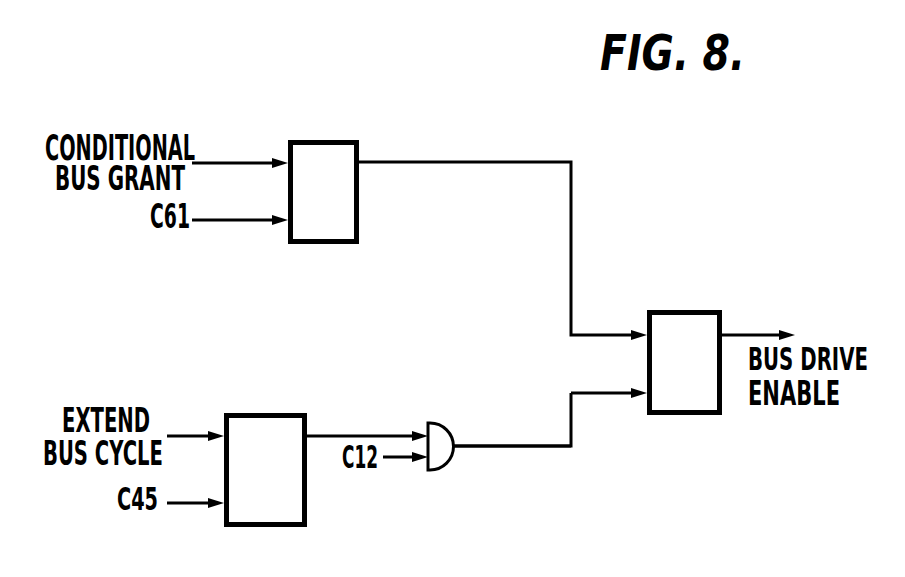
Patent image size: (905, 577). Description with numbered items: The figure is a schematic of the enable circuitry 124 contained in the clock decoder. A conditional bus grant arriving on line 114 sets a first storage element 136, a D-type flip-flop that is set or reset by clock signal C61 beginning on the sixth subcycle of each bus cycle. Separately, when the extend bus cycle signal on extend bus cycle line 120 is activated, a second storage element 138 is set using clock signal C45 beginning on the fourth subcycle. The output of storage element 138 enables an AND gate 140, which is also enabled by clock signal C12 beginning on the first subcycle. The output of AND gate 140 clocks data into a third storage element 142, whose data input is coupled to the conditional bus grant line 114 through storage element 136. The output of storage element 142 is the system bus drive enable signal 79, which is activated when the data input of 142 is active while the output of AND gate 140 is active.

The conditional bus grant line 114 is at (240, 161).
The storage element 136 is at (318, 140).
The storage element 142 is at (683, 310).
The system bus drive enable signal 79 is at (754, 333).
The extend bus cycle line 120 is at (192, 434).
The storage element 138 is at (258, 413).
The AND gate 140 is at (443, 430).
The enable circuitry 124 is at (563, 469).